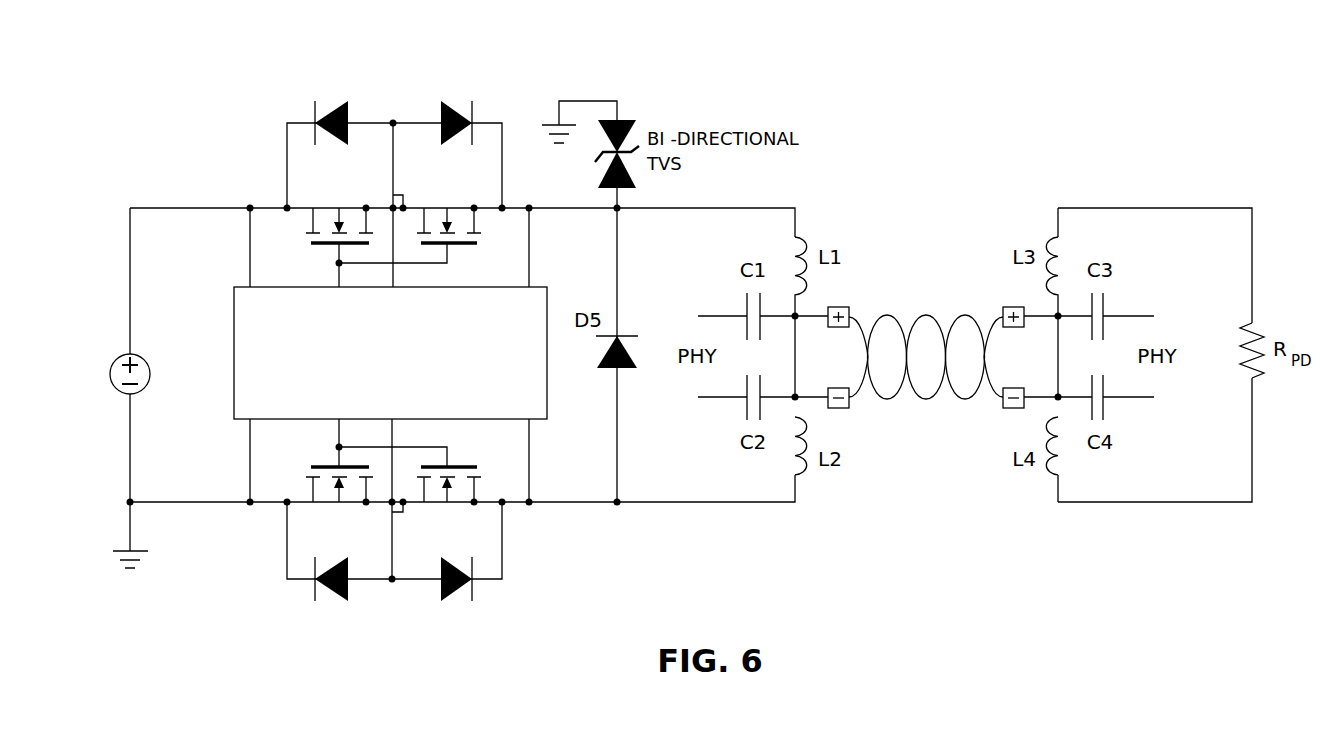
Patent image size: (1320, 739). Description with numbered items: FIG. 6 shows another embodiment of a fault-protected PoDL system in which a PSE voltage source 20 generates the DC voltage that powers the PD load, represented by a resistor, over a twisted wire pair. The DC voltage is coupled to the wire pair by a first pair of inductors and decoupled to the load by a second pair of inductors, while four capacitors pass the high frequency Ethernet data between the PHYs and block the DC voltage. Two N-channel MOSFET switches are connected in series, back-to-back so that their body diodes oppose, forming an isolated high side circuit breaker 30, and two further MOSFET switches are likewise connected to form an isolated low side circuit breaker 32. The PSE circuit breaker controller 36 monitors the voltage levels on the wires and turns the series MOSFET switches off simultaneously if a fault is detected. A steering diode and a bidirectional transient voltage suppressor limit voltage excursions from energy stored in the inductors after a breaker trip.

The PSE voltage source 20 is at (150, 375).
The high side circuit breaker 30 is at (262, 157).
The low side circuit breaker 32 is at (265, 536).
The PSE circuit breaker controller 36 is at (234, 310).